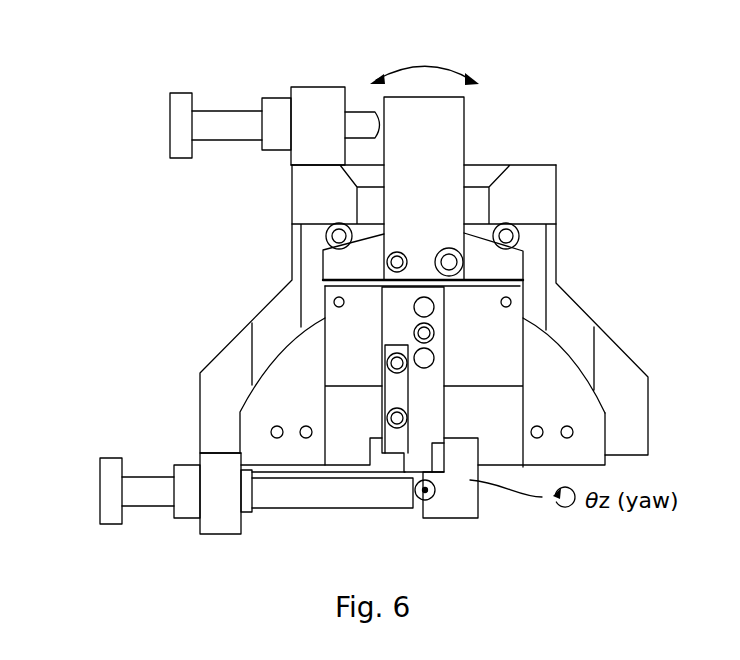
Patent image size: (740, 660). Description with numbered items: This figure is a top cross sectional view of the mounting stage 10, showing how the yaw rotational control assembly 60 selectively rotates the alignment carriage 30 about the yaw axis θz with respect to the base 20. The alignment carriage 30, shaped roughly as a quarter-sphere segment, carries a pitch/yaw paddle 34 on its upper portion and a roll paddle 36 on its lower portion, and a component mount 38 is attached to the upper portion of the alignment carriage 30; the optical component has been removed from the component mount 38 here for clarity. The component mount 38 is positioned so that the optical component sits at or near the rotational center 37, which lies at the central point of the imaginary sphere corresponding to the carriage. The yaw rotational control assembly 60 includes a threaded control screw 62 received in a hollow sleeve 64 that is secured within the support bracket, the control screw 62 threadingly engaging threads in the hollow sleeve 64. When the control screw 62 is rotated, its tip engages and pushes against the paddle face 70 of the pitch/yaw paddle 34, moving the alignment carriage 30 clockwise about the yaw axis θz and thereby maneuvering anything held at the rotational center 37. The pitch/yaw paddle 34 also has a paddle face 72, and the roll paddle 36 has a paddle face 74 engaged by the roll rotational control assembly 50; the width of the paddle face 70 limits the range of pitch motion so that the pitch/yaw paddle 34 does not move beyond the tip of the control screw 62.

The mounting stage 10 is at (124, 184).
The base 20 is at (256, 299).
The alignment carriage 30 is at (569, 329).
The pitch/yaw paddle 34 is at (447, 122).
The roll paddle 36 is at (455, 503).
The rotational center 37 is at (425, 493).
The component mount 38 is at (430, 423).
The roll rotational control assembly 50 is at (144, 530).
The yaw rotational control assembly 60 is at (214, 96).
The control screw 62 is at (180, 126).
The hollow sleeve 64 is at (280, 140).
The paddle face 70 is at (383, 110).
The paddle face 72 is at (434, 197).
The paddle face 74 is at (418, 500).